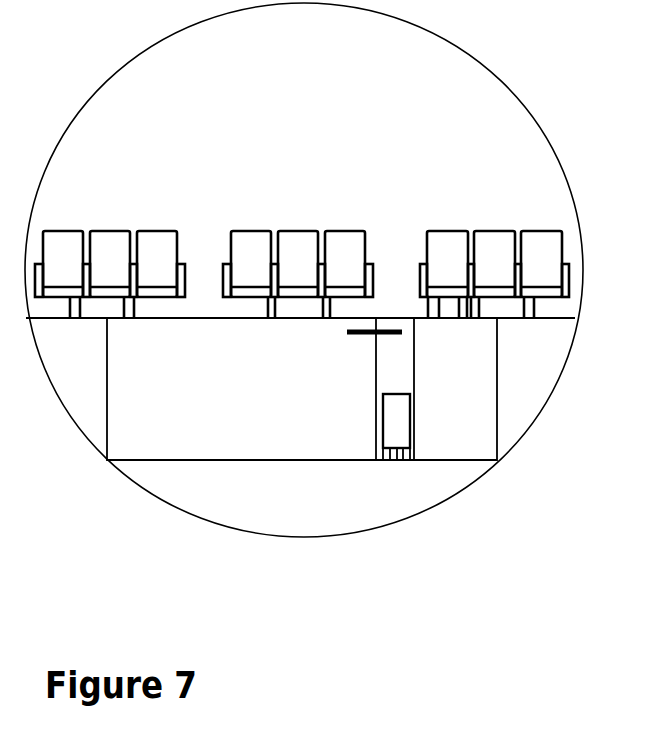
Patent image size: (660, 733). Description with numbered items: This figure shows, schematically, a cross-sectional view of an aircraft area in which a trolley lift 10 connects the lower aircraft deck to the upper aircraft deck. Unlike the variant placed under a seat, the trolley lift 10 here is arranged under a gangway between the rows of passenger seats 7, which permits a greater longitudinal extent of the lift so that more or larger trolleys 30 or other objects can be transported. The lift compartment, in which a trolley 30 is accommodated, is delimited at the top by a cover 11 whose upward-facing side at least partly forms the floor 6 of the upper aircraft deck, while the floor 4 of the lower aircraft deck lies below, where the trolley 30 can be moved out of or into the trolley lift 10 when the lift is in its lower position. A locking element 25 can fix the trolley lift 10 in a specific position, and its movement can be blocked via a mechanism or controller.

The floor of the lower aircraft deck 4 is at (140, 461).
The floor of the upper aircraft deck 6 is at (550, 318).
The passenger seat 7 is at (447, 242).
The trolley lift 10 is at (410, 376).
The cover 11 is at (397, 318).
The locking element 25 is at (357, 336).
The trolley 30 is at (393, 437).